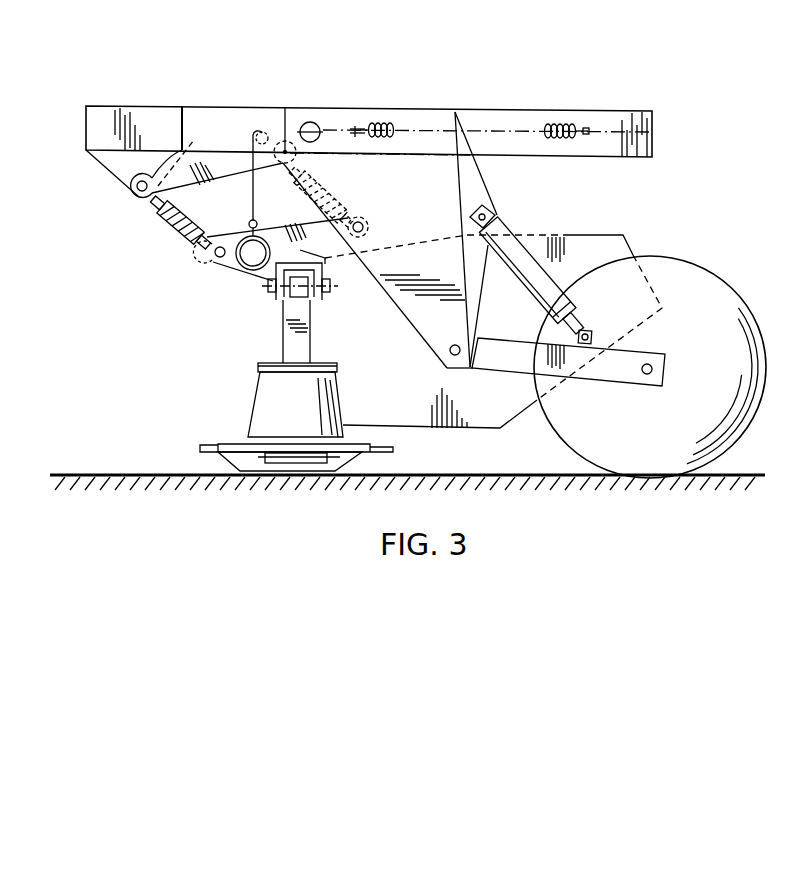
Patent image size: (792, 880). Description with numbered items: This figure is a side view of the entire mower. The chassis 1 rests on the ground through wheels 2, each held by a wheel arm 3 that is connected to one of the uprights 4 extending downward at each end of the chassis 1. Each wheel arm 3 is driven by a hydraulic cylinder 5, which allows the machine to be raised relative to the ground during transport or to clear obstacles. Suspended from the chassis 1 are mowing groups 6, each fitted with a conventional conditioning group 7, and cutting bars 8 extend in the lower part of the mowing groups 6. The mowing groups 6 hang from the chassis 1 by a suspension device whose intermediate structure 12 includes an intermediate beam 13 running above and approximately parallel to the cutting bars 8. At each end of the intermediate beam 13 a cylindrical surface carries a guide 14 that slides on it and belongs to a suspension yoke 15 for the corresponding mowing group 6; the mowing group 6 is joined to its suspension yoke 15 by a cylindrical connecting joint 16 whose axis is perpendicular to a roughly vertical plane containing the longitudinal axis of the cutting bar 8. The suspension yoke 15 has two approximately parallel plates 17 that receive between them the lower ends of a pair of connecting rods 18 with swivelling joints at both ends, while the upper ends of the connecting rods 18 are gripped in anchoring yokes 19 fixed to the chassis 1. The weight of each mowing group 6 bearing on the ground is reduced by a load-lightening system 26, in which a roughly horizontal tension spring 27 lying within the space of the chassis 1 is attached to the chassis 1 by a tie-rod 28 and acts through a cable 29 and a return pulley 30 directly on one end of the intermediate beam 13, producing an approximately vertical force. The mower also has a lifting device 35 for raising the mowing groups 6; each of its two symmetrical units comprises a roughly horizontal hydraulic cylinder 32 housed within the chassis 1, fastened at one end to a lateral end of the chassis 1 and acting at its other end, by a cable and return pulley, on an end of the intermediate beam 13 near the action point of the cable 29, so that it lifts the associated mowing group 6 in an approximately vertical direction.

The chassis 1 is at (122, 100).
The wheel 2 is at (732, 420).
The wheel arm 3 is at (602, 375).
The upright 4 is at (457, 186).
The hydraulic cylinder 5 is at (518, 247).
The mowing group 6 is at (240, 393).
The conditioning group 7 is at (414, 410).
The cutting bar 8 is at (292, 460).
The intermediate structure 12 is at (280, 218).
The intermediate beam 13 is at (250, 257).
The guide 14 is at (217, 253).
The suspension yoke 15 is at (283, 312).
The cylindrical connecting joint 16 is at (268, 288).
The plate 17 is at (325, 258).
The connecting rod 18 is at (172, 225).
The anchoring yoke 19 is at (217, 158).
The load-lightening system 26 is at (400, 118).
The tension spring 27 is at (545, 125).
The tie-rod 28 is at (582, 125).
The cable 29 is at (334, 128).
The return pulley 30 is at (260, 131).
The hydraulic cylinder 32 is at (290, 140).
The lifting device 35 is at (310, 118).